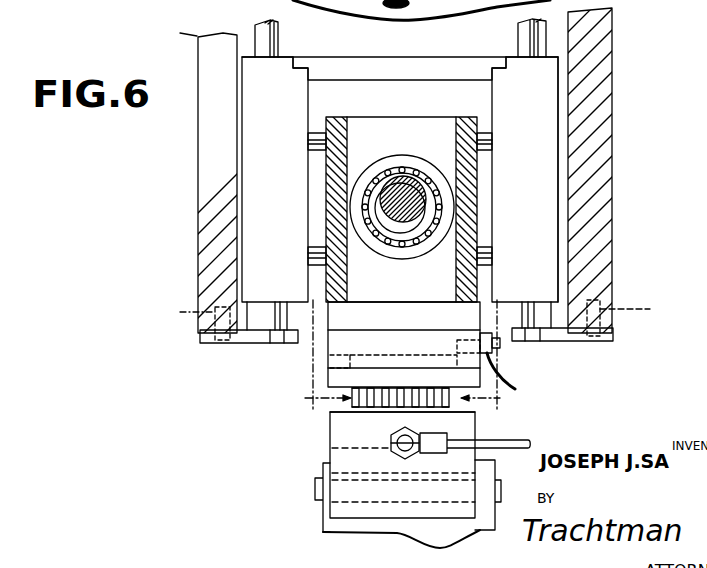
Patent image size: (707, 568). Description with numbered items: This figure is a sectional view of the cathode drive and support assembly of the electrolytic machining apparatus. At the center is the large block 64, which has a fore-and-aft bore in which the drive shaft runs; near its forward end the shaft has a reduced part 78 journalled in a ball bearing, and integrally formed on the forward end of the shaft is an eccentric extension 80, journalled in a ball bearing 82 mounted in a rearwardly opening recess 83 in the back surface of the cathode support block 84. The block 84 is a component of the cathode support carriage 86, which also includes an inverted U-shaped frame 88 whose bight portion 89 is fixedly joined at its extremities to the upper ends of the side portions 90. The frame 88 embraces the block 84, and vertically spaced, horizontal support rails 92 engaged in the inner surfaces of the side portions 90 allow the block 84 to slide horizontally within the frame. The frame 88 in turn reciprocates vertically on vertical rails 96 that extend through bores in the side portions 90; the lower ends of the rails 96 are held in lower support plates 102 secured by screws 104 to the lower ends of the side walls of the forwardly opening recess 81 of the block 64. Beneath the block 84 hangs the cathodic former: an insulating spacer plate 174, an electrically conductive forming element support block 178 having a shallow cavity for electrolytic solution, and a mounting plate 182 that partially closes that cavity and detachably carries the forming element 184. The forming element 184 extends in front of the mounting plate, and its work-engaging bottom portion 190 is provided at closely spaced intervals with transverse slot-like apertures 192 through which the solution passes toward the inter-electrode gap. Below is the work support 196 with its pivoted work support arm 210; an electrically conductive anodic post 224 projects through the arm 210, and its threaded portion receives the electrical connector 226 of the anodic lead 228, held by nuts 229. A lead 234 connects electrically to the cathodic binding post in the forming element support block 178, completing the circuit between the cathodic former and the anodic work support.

The block 64 is at (198, 185).
The reduced part of shaft 78 is at (393, 180).
The eccentric extension 80 is at (400, 237).
The forwardly opening recess 81 is at (562, 168).
The ball bearing 82 is at (413, 250).
The rearwardly opening recess 83 is at (343, 153).
The cathode support block 84 is at (392, 116).
The cathode support carriage 86 is at (441, 55).
The frame 88 is at (411, 38).
The bight portion 89 is at (332, 70).
The side portions of frame 90 is at (283, 153).
The support rails 92 is at (483, 133).
The vertical rails 96 is at (258, 30).
The lower support plates 102 is at (240, 343).
The screws 104 is at (180, 312).
The spacer plate 174 is at (340, 323).
The forming element support block 178 is at (333, 367).
The mounting plate 182 is at (380, 372).
The forming element 184 is at (495, 383).
The work-engaging bottom portion 190 is at (357, 405).
The slot-like apertures 192 is at (432, 390).
The work support 196 is at (377, 413).
The work support arm 210 is at (463, 428).
The anodic post 224 is at (405, 455).
The electrical connector 226 is at (410, 458).
The anodic lead 228 is at (490, 440).
The nuts 229 is at (396, 447).
The lead 234 is at (517, 389).